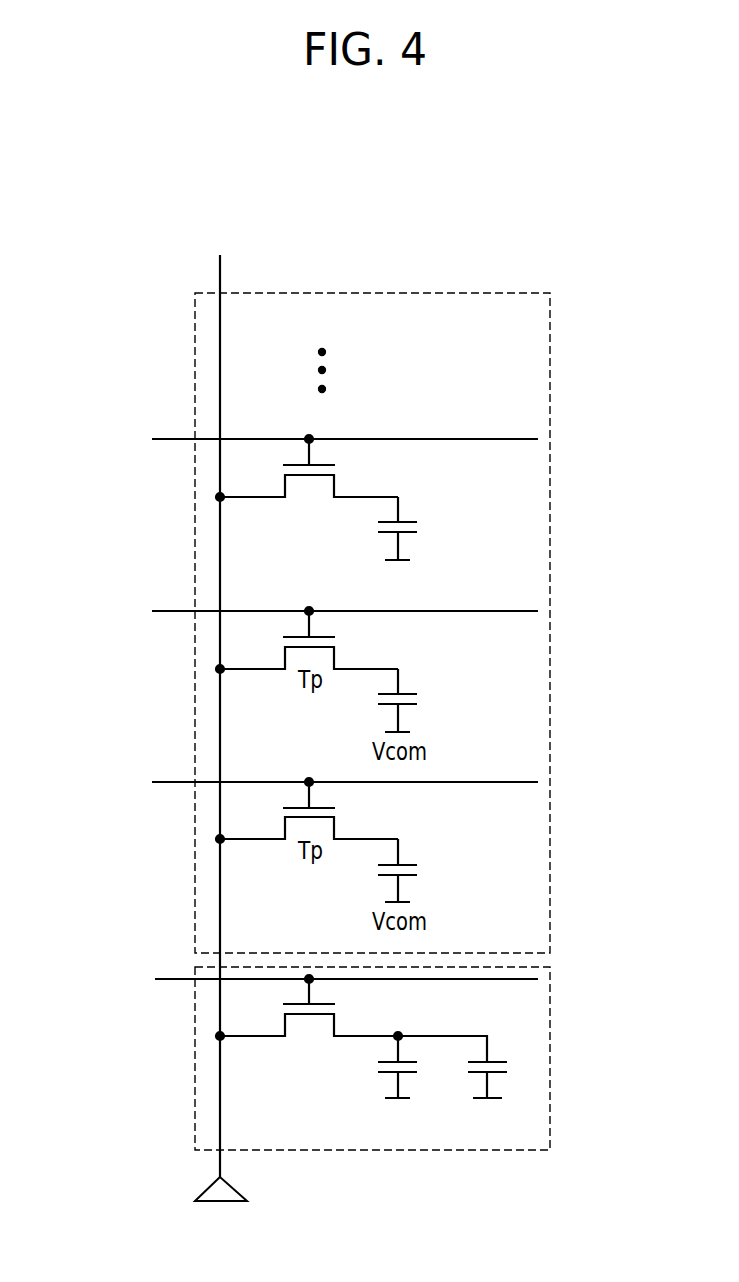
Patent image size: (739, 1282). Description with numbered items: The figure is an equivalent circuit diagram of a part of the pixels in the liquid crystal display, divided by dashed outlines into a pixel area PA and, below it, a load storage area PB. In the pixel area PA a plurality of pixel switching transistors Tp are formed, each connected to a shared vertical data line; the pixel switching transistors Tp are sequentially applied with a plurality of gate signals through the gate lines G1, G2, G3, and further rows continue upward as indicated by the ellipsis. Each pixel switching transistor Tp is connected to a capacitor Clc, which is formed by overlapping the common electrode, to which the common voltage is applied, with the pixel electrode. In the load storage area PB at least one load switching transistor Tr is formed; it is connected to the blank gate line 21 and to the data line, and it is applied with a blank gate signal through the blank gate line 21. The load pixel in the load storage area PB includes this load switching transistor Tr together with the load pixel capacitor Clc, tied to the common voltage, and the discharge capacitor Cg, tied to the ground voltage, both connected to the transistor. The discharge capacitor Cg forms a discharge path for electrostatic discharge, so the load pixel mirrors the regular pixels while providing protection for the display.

The blank gate line 21 is at (178, 981).
The gate line G1 is at (178, 784).
The gate line G2 is at (178, 613).
The gate line G3 is at (178, 441).
The pixel area PA is at (550, 683).
The load storage area PB is at (550, 1058).
The pixel switching transistor Tp is at (321, 513).
The load switching transistor Tr is at (307, 1016).
The capacitor Clc is at (383, 1082).
The discharge capacitor Cg is at (454, 1085).